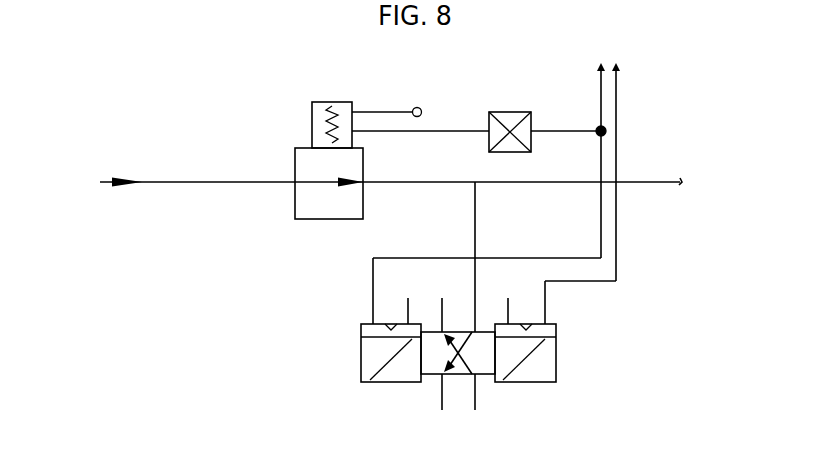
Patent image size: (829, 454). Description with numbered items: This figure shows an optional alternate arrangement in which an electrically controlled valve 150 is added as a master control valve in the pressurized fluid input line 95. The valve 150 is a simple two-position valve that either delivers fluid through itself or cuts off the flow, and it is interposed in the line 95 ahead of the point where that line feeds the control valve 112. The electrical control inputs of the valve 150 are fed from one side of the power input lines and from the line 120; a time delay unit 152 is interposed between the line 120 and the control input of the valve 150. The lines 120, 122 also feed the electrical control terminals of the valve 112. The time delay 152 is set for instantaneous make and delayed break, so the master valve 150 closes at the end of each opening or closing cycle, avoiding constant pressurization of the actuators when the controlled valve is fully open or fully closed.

The pressurized fluid input line 95 is at (193, 185).
The electrically controlled valve 150 is at (335, 221).
The time delay unit 152 is at (488, 112).
The line 120 is at (599, 100).
The line 122 is at (618, 143).
The valve 112 is at (361, 345).